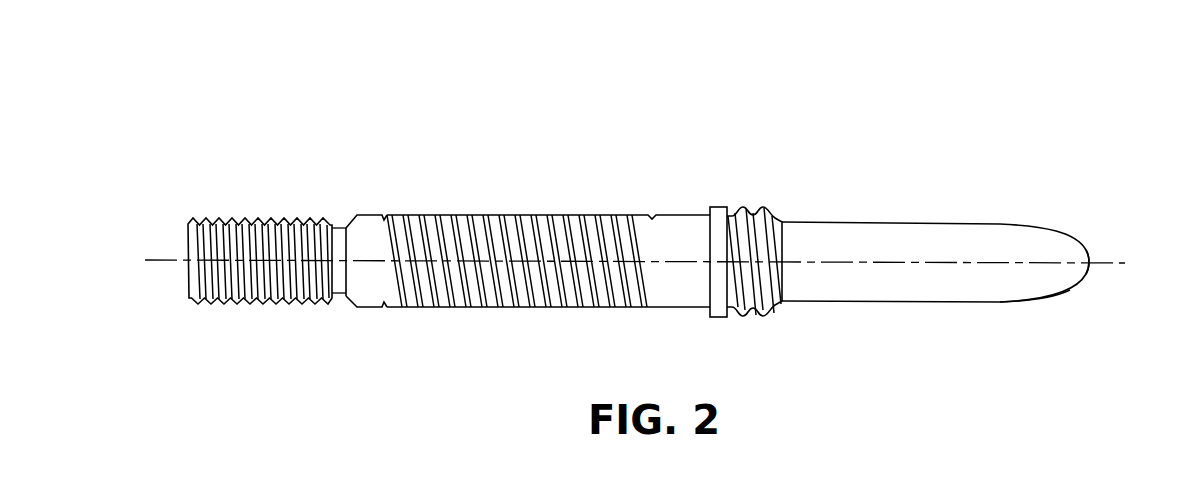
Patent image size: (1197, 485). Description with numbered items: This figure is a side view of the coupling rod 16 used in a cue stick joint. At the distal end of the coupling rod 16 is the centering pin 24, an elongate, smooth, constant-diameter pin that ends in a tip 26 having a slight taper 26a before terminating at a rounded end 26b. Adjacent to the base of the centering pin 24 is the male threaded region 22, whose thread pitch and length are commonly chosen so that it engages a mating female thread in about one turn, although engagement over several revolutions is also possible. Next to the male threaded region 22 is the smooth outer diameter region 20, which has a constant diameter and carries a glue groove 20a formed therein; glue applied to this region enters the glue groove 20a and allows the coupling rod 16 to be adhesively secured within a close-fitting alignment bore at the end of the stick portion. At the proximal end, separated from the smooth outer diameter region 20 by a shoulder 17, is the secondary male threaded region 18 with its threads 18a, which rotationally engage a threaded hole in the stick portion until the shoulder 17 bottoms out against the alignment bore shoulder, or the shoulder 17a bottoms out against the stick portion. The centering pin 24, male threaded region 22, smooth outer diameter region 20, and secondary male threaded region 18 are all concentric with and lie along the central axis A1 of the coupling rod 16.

The coupling rod 16 is at (697, 127).
The shoulder 17 is at (343, 224).
The shoulder 17a is at (709, 316).
The secondary male threaded region 18 is at (250, 252).
The threads 18a is at (259, 306).
The smooth outer diameter region 20 is at (467, 252).
The glue groove 20a is at (552, 212).
The male threaded region 22 is at (738, 206).
The centering pin 24 is at (917, 222).
The tip 26 is at (1083, 240).
The taper 26a is at (1030, 302).
The rounded end 26b is at (1089, 277).
The central axis A1 is at (843, 265).